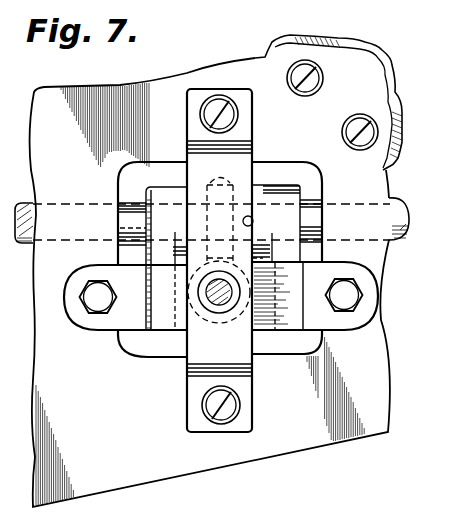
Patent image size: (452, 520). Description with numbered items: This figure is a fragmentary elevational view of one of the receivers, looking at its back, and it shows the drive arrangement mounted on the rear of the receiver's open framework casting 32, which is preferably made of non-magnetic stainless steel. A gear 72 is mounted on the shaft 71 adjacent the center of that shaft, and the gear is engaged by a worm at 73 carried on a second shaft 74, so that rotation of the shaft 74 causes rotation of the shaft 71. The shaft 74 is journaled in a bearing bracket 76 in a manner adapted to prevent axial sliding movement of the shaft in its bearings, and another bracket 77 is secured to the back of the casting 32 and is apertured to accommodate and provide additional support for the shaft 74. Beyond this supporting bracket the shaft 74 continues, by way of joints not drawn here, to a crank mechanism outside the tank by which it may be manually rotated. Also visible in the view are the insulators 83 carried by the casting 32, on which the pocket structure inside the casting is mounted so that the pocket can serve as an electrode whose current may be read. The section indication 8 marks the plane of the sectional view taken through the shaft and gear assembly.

The framework casting 32 is at (380, 403).
The shaft 71 is at (396, 210).
The gear 72 is at (226, 186).
The worm 73 is at (210, 322).
The shaft 74 is at (227, 300).
The bearing bracket 76 is at (160, 323).
The bracket 77 is at (192, 175).
The insulators 83 is at (397, 90).
The section line 8- 8 is at (218, 114).